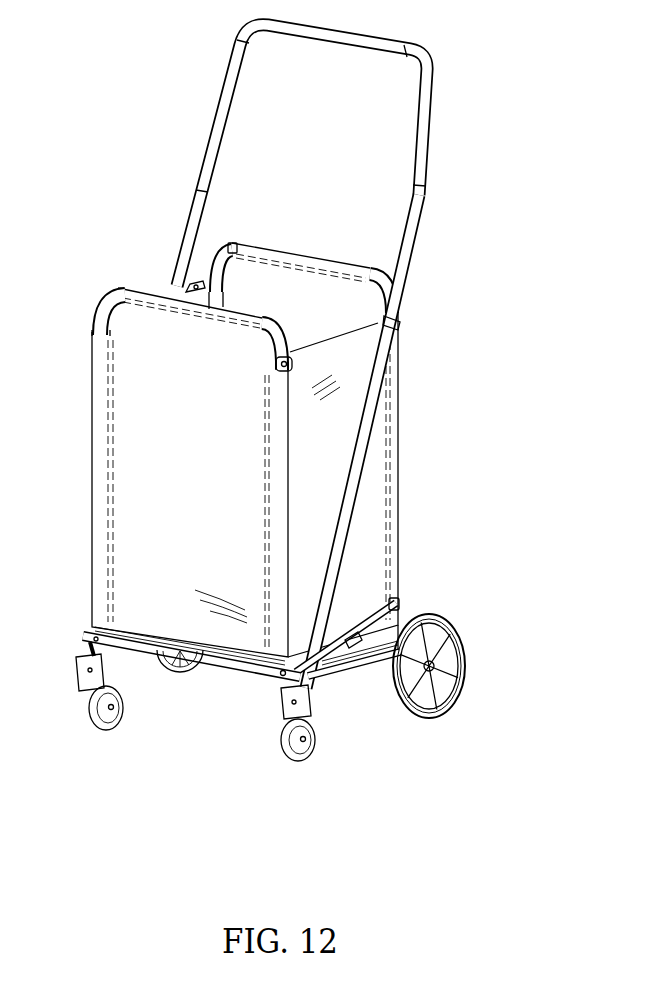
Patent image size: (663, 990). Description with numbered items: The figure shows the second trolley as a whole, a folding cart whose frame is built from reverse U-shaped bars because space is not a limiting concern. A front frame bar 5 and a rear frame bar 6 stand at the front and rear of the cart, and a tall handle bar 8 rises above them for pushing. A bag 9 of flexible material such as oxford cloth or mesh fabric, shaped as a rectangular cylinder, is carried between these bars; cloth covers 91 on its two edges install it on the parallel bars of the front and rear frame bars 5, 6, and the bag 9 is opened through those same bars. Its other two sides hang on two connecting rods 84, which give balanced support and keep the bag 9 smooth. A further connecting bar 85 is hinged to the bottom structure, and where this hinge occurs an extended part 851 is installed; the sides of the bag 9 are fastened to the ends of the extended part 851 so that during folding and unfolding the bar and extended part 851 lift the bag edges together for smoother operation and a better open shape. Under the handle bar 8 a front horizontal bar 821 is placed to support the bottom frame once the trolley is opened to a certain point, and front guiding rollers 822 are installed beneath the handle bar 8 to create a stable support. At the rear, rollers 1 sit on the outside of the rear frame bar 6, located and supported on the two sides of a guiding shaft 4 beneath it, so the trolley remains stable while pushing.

The roller 1 is at (444, 607).
The guiding shaft 4 is at (363, 664).
The front frame bar 5 is at (106, 286).
The rear frame bar 6 is at (233, 241).
The handle bar 8 is at (187, 184).
The bag 9 is at (283, 287).
The connecting bar 84 is at (182, 282).
The connecting bar 85 is at (332, 674).
The cloth cover 91 is at (267, 371).
The front horizontal bar 821 is at (246, 679).
The front guiding roller 822 is at (280, 753).
The extended part 851 is at (398, 597).